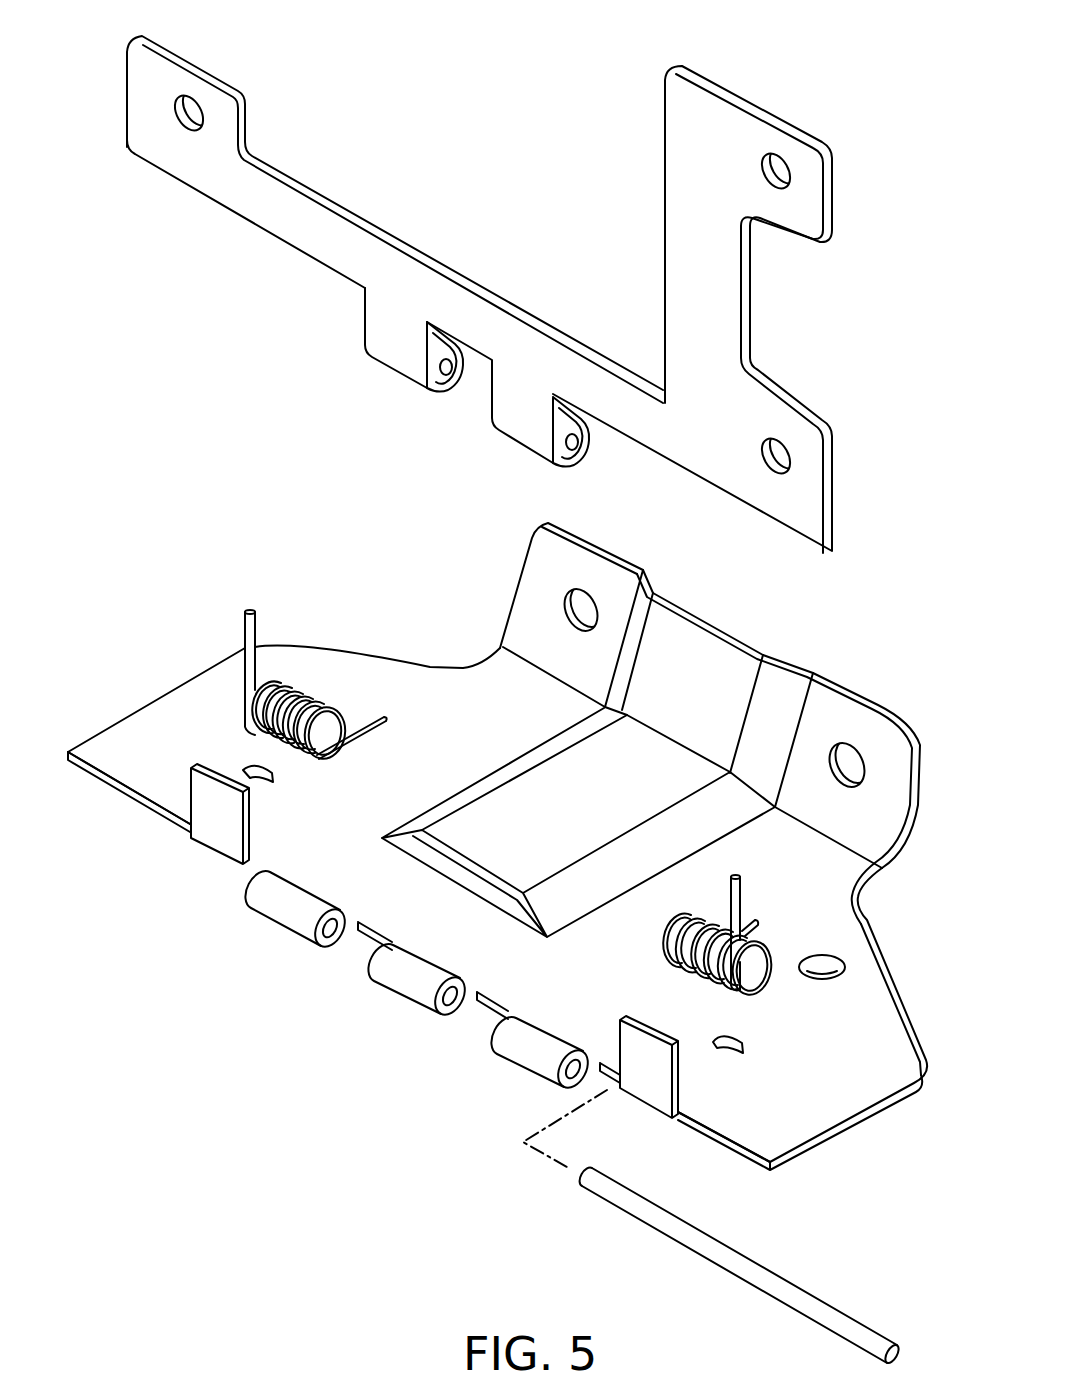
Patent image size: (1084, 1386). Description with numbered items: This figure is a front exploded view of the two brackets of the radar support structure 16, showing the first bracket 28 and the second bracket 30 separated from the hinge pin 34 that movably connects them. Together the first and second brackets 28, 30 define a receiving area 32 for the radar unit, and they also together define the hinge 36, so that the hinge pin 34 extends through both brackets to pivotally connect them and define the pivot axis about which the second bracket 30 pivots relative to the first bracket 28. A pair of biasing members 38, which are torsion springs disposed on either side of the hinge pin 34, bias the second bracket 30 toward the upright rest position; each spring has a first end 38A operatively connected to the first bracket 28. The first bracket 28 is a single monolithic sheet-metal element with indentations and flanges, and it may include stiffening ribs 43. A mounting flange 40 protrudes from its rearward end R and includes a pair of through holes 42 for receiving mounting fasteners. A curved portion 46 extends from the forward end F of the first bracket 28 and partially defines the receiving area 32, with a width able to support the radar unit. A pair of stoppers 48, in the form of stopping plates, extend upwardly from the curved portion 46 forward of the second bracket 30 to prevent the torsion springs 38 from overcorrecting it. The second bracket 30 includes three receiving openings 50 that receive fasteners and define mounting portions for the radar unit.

The radar support structure 16 is at (502, 546).
The first bracket 28 is at (502, 860).
The second bracket 30 is at (242, 225).
The receiving area 32 is at (132, 766).
The hinge pin 34 is at (837, 1310).
The hinge 36 is at (389, 380).
The biasing member 38 is at (312, 700).
The first end 38A is at (273, 779).
The mounting flange 40 is at (707, 660).
The through holes 42 is at (565, 612).
The stiffening ribs 43 is at (705, 826).
The curved portion 46 is at (162, 783).
The stopper 48 is at (217, 810).
The receiving openings 50 is at (178, 122).
The forward end F is at (96, 707).
The rearward end R is at (884, 895).